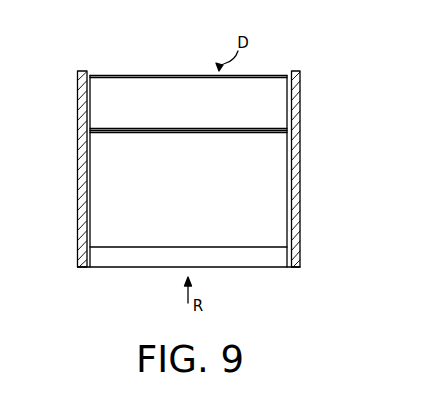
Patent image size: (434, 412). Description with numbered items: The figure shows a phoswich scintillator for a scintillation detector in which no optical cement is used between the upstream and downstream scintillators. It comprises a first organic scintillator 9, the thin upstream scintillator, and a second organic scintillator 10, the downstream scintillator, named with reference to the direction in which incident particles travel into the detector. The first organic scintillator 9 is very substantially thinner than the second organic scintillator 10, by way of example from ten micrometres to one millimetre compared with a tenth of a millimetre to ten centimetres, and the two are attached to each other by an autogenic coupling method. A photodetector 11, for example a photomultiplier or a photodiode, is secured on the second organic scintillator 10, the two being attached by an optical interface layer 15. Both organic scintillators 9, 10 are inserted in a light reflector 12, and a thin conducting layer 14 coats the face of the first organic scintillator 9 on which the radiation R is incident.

The first organic scintillator 9 is at (105, 258).
The second organic scintillator 10 is at (101, 163).
The photodetector 11 is at (273, 100).
The light reflector 12 is at (87, 198).
The thin conducting layer 14 is at (135, 267).
The optical interface layer 15 is at (257, 132).